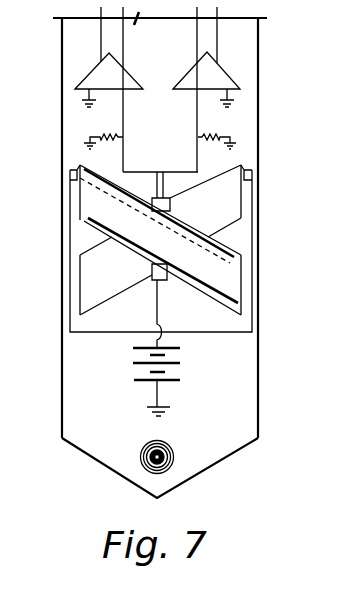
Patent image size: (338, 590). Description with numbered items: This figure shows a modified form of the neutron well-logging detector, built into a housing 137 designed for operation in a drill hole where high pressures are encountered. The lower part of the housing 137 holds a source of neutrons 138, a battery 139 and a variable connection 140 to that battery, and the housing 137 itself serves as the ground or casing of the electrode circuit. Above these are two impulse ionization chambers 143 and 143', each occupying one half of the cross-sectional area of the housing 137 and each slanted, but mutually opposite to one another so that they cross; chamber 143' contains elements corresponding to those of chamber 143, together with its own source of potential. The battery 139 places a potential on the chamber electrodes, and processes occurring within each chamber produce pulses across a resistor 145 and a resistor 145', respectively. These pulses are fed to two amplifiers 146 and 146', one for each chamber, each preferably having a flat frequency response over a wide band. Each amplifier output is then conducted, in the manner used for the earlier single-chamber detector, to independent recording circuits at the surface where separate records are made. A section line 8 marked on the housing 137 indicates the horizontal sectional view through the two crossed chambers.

The section line 8- 8 is at (27, 322).
The housing 137 is at (259, 62).
The source of neutrons 138 is at (172, 446).
The battery 139 is at (138, 369).
The variable connection 140 is at (70, 332).
The ionization chamber 143 is at (160, 242).
The ionization chamber 143' is at (160, 242).
The resistor 145 is at (130, 138).
The resistor 145' is at (193, 146).
The amplifier 146 is at (125, 76).
The amplifier 146' is at (194, 79).